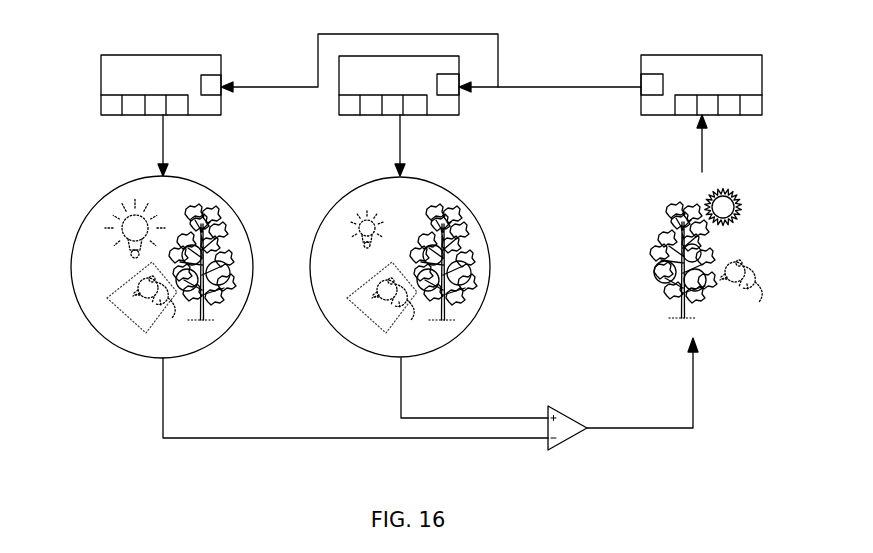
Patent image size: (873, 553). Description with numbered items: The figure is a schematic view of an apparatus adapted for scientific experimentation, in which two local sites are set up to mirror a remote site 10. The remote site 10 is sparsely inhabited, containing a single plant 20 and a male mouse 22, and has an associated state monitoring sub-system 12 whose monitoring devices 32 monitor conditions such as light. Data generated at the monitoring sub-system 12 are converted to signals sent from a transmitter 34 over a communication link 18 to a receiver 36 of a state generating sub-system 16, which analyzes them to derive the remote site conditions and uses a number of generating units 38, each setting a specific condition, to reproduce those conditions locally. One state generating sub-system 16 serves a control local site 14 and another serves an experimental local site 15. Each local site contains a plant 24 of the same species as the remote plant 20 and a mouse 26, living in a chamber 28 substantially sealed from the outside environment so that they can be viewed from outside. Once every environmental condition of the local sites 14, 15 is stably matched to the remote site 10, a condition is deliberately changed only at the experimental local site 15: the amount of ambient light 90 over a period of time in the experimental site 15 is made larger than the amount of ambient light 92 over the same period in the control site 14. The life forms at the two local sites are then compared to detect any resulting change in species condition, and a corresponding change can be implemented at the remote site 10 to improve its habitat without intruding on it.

The remote site 10 is at (720, 254).
The state monitoring sub-system 12 is at (705, 107).
The control local site 14 is at (406, 267).
The experimental local site 15 is at (282, 263).
The state generating sub-system 16 is at (101, 70).
The communication link 18 is at (563, 86).
The plant 20 is at (665, 262).
The male mouse 22 is at (747, 277).
The plant 24 is at (222, 272).
The mouse 26 is at (134, 296).
The chamber 28 is at (124, 184).
The monitoring devices 32 is at (733, 105).
The transmitter 34 is at (648, 85).
The receiver 36 is at (215, 90).
The generating units 38 is at (127, 110).
The ambient light 90 is at (131, 233).
The ambient light 92 is at (362, 233).